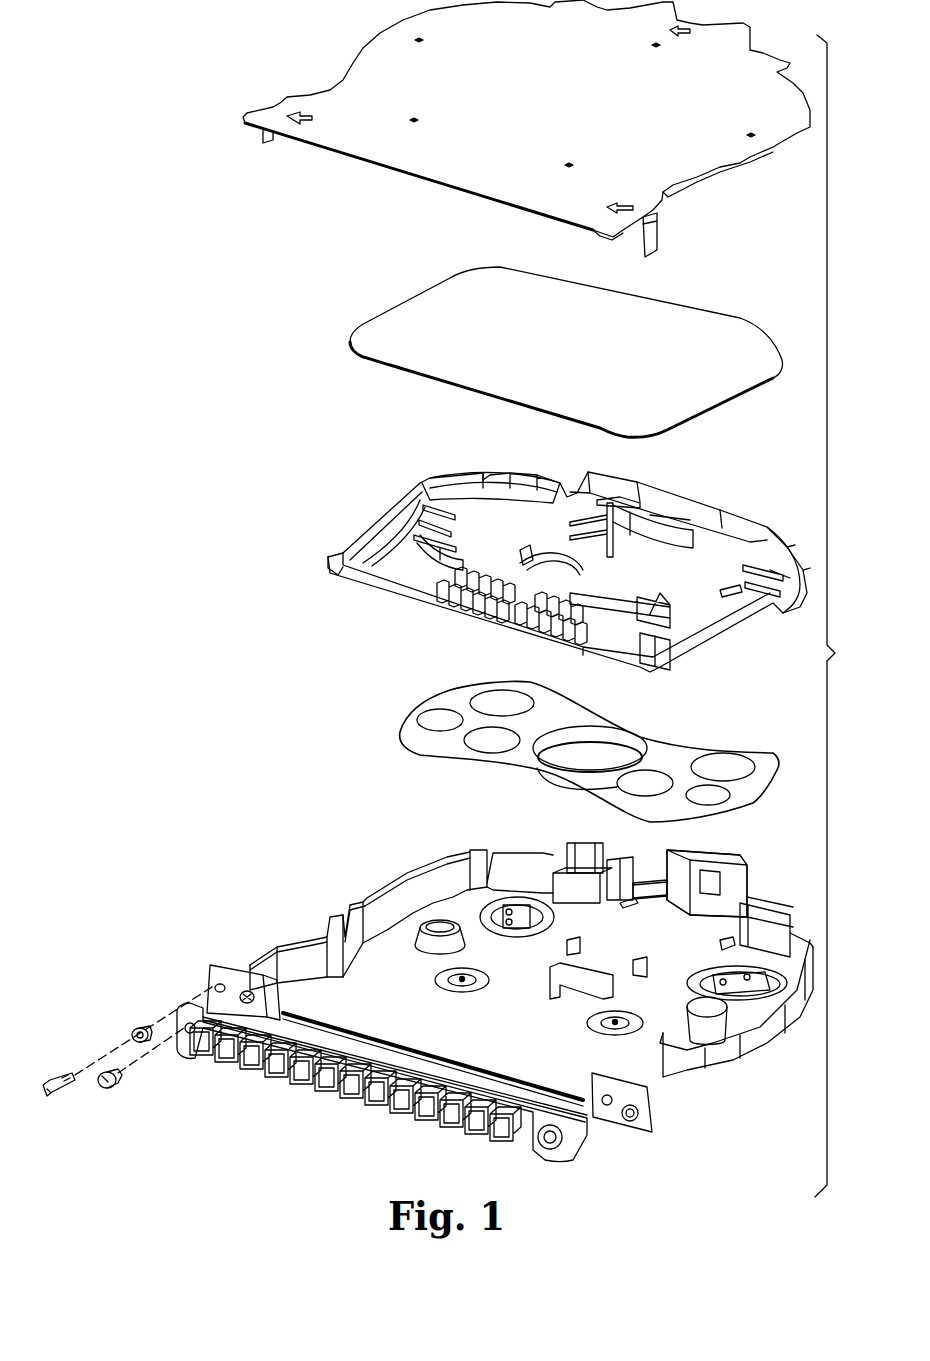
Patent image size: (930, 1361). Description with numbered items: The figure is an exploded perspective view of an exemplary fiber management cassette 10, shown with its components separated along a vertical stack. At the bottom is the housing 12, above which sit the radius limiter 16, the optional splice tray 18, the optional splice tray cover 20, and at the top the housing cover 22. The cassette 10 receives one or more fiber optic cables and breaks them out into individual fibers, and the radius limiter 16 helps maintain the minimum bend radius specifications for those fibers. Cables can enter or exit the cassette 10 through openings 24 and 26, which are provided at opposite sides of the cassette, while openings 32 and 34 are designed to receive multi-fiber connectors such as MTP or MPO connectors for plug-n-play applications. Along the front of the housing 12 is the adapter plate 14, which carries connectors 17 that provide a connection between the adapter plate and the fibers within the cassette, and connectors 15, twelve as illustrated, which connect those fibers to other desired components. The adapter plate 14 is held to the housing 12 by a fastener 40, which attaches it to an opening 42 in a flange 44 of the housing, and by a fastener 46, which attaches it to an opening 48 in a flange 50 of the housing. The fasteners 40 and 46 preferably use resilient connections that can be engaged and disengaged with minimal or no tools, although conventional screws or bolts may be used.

The fiber management cassette 10 is at (840, 616).
The housing 12 is at (380, 880).
The adapter plate 14 is at (330, 1110).
The connectors 15 is at (237, 1082).
The radius limiter 16 is at (410, 704).
The connectors 17 is at (333, 1028).
The splice tray 18 is at (373, 518).
The splice tray cover 20 is at (392, 302).
The housing cover 22 is at (357, 50).
The opening 24 is at (560, 853).
The opening 26 is at (797, 927).
The opening 32 is at (650, 870).
The opening 34 is at (757, 887).
The fastener 40 is at (100, 1090).
The opening 42 is at (252, 999).
The flange 44 is at (210, 973).
The fastener 46 is at (552, 1150).
The opening 48 is at (607, 1107).
The flange 50 is at (640, 1127).